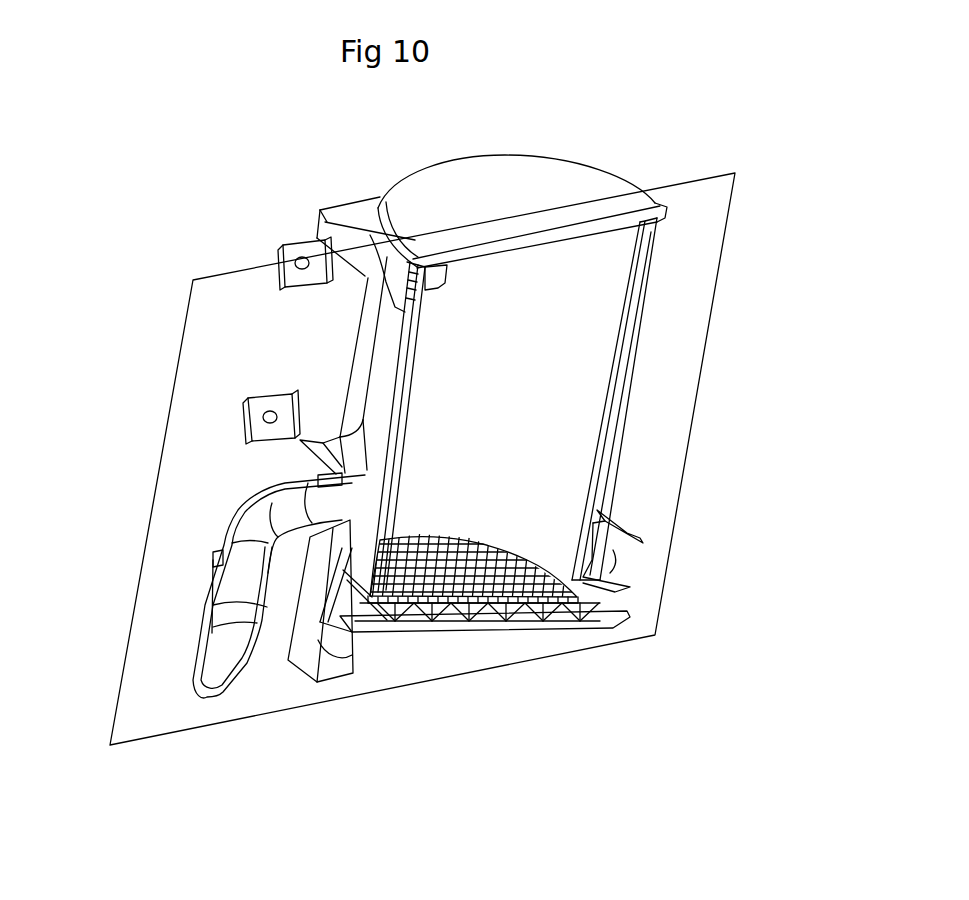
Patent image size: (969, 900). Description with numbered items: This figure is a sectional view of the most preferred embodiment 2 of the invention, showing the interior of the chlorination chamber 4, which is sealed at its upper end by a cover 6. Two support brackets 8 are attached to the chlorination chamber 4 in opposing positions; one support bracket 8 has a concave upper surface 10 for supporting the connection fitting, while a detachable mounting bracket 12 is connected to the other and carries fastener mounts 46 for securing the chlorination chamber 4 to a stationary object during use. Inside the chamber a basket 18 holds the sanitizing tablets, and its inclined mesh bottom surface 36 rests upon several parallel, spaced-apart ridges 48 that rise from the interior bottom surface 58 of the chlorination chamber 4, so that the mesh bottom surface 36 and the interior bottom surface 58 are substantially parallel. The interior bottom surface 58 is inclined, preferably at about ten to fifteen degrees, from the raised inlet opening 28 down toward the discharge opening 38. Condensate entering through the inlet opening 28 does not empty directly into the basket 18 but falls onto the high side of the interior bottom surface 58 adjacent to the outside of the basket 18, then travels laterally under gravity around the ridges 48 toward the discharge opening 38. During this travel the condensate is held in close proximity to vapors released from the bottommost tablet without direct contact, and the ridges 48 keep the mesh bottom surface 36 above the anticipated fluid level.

The most preferred embodiment 2 is at (134, 103).
The chlorination chamber 4 is at (664, 286).
The cover 6 is at (521, 183).
The support bracket 8 is at (328, 392).
The concave upper surface 10 is at (334, 227).
The mounting bracket 12 is at (303, 328).
The basket 18 is at (559, 352).
The inlet opening 28 is at (331, 530).
The mesh bottom surface 36 is at (524, 560).
The discharge opening 38 is at (614, 590).
The fastener mounts 46 is at (260, 262).
The ridges 48 is at (483, 631).
The interior bottom surface 58 is at (545, 644).